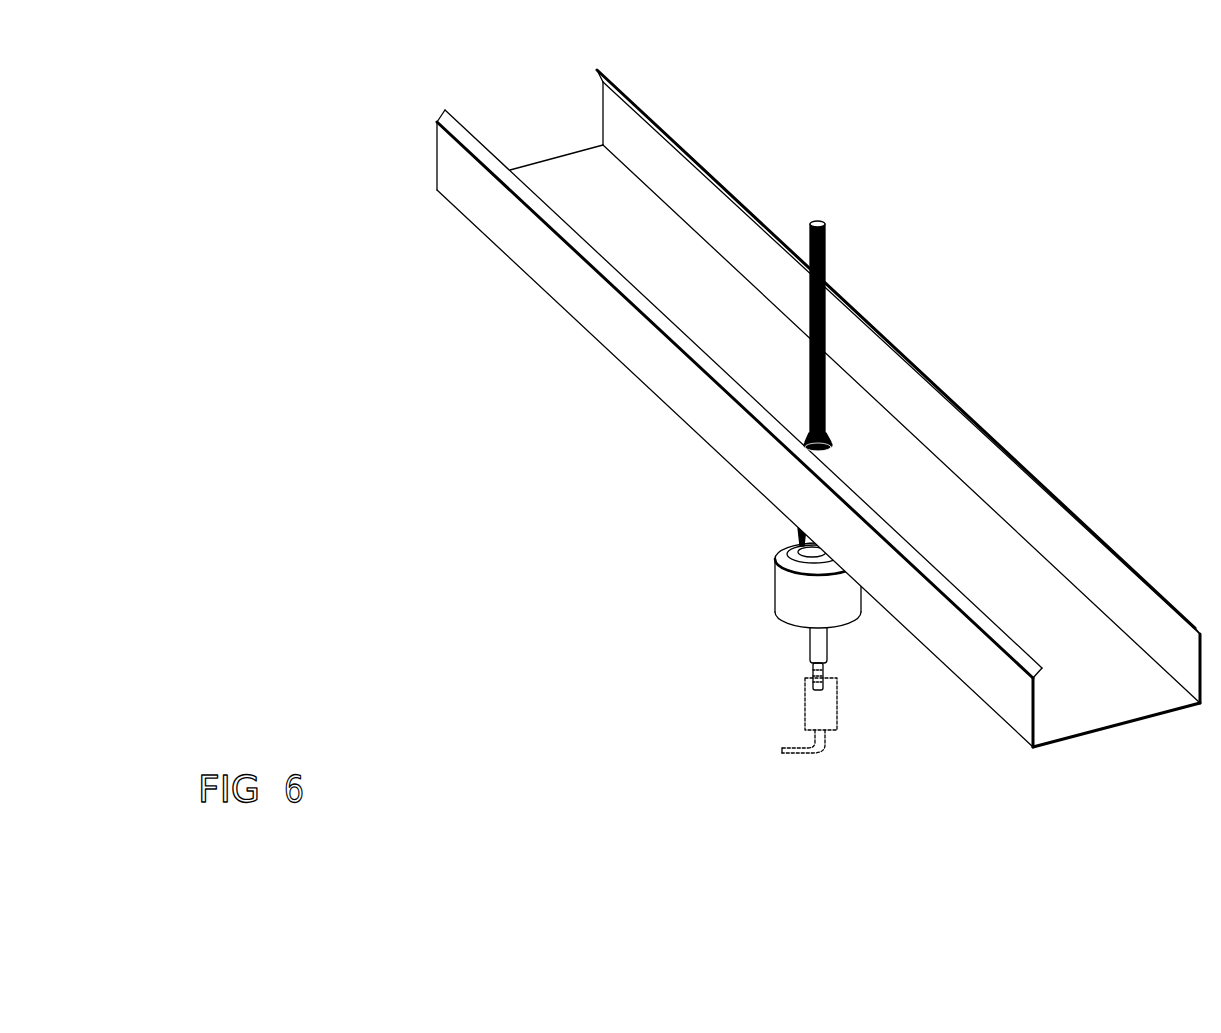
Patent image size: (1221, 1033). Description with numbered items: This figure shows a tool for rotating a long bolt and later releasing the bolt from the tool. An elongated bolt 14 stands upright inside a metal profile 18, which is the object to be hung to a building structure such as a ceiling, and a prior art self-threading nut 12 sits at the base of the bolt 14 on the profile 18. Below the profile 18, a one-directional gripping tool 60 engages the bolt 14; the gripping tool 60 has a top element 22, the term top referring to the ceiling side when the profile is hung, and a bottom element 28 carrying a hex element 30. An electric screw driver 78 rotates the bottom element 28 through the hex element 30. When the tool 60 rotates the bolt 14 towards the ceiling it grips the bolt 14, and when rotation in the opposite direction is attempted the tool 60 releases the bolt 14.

The prior art self-threading nut 12 is at (827, 430).
The elongated bolt 14 is at (828, 258).
The metal profile 18 is at (1040, 517).
The top element of the gripping tool 22 is at (782, 582).
The bottom element of the gripping tool 28 is at (814, 640).
The hex element 30 is at (812, 671).
The gripping tool 60 is at (735, 598).
The screw driver 78 is at (815, 718).